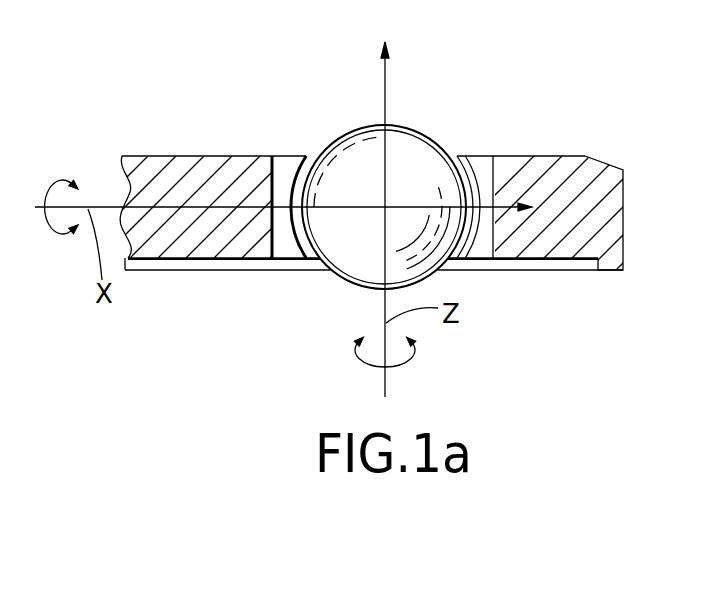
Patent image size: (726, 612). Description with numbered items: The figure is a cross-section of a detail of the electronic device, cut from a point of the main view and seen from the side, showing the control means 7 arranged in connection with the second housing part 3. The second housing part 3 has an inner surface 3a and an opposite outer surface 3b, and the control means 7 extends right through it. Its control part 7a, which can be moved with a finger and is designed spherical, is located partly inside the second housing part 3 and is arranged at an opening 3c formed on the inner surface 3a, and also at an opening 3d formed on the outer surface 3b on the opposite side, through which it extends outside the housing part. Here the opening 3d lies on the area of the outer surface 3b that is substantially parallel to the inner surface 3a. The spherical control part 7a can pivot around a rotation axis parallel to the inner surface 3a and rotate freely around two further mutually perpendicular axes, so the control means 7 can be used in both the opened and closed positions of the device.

The second housing part 3 is at (172, 176).
The inner surface of the second housing part 3a is at (172, 259).
The outer surface of the second housing part 3b is at (212, 157).
The opening on the inner surface 3c is at (316, 283).
The opening on the outer surface 3d is at (308, 132).
The control means 7 is at (472, 121).
The control part 7a is at (409, 146).